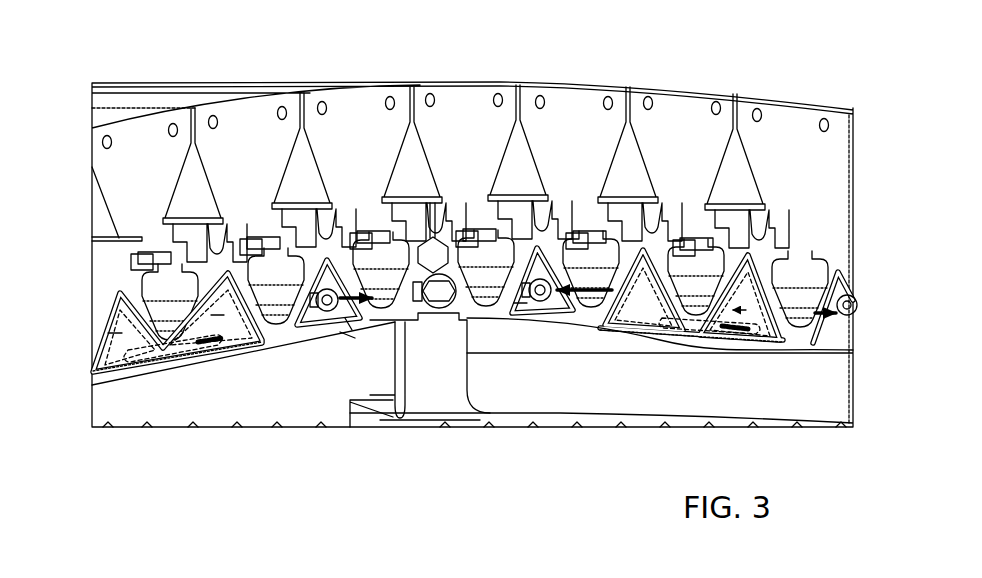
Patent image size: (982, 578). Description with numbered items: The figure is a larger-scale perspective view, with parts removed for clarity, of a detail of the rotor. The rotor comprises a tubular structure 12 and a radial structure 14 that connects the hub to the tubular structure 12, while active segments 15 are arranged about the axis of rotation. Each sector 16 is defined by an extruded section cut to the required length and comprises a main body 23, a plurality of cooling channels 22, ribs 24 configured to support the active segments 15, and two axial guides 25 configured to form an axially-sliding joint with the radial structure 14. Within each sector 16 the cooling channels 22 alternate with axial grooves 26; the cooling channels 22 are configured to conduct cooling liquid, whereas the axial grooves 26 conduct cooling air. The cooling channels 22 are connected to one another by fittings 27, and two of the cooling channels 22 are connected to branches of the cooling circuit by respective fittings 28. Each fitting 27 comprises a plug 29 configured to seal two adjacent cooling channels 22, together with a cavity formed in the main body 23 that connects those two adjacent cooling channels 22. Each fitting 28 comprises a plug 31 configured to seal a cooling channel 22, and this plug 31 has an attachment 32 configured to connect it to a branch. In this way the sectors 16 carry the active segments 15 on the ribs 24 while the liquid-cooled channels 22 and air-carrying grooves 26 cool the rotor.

The tubular structure 12 is at (772, 358).
The radial structure 14 is at (383, 381).
The active segments 15 is at (853, 112).
The sector 16 is at (702, 345).
The cooling channels 22 is at (830, 343).
The main body 23 is at (267, 353).
The ribs 24 is at (822, 245).
The axial guides 25 is at (412, 307).
The axial grooves 26 is at (170, 290).
The fittings 27 is at (213, 350).
The fittings 28 is at (848, 347).
The plug 29 is at (262, 325).
The plug 31 is at (347, 324).
The attachment 32 is at (550, 288).